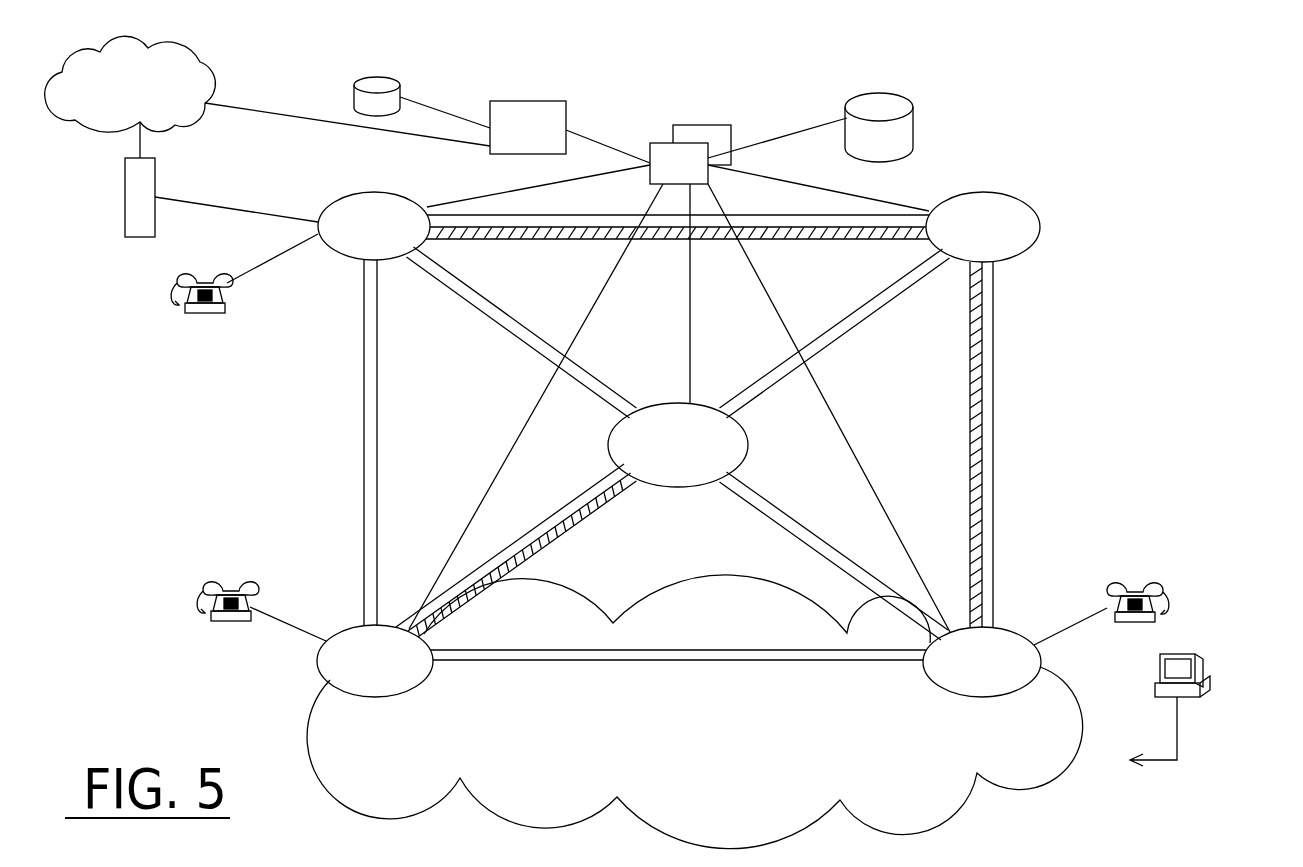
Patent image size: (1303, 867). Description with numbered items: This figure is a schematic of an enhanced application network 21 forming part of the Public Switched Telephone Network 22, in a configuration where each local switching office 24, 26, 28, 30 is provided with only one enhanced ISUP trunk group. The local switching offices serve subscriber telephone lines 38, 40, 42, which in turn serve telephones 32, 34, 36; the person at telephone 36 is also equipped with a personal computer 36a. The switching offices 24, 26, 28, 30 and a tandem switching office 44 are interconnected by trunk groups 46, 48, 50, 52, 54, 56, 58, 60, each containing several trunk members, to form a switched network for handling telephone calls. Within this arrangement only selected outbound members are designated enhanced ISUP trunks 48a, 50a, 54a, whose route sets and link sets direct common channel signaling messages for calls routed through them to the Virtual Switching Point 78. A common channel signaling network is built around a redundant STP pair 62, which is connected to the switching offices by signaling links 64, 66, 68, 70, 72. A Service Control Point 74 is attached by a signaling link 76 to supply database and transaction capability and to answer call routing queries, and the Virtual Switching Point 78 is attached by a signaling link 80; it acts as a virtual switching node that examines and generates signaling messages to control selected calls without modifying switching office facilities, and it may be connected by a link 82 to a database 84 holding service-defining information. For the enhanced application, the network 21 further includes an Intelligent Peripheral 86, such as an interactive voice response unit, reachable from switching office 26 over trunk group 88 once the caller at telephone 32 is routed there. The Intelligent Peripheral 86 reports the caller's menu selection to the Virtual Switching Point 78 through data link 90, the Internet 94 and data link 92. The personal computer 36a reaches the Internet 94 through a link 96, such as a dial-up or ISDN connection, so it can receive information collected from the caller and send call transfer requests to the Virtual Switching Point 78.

The enhanced application network 21 is at (1129, 374).
The Public Switched Telephone Network 22 is at (1076, 700).
The switching office 24 is at (420, 690).
The switching office 26 is at (373, 192).
The switching office 28 is at (1022, 200).
The switching office 30 is at (935, 691).
The telephone 32 is at (200, 598).
The telephone 34 is at (177, 285).
The telephone 36 is at (1163, 600).
The personal computer 36a is at (1212, 672).
The subscriber telephone line 38 is at (309, 634).
The subscriber telephone line 40 is at (266, 263).
The subscriber telephone line 42 is at (1047, 638).
The tandem switching office 44 is at (670, 487).
The trunk group 46 is at (362, 402).
The trunk group 48 is at (591, 214).
The enhanced ISUP trunk 48a is at (663, 243).
The trunk group 50 is at (995, 405).
The enhanced ISUP trunk 50a is at (969, 408).
The trunk group 52 is at (671, 648).
The trunk group 54 is at (552, 515).
The enhanced ISUP trunk 54a is at (584, 521).
The trunk group 56 is at (546, 335).
The trunk group 58 is at (812, 345).
The trunk group 60 is at (806, 525).
The Signaling Transfer Point pair 62 is at (697, 125).
The signaling link 64 is at (466, 199).
The signaling link 66 is at (530, 412).
The signaling link 68 is at (692, 312).
The signaling link 70 is at (858, 447).
The signaling link 72 is at (806, 184).
The Service Control Point 74 is at (915, 118).
The signaling link 76 is at (758, 143).
The Virtual Switching Point 78 is at (535, 100).
The signaling link 80 is at (591, 140).
The link 82 is at (447, 113).
The database 84 is at (373, 82).
The Intelligent Peripheral 86 is at (125, 200).
The trunk group 88 is at (197, 203).
The data link 90 is at (138, 143).
The data link 92 is at (283, 115).
The Internet 94 is at (205, 83).
The link 96 is at (1180, 735).